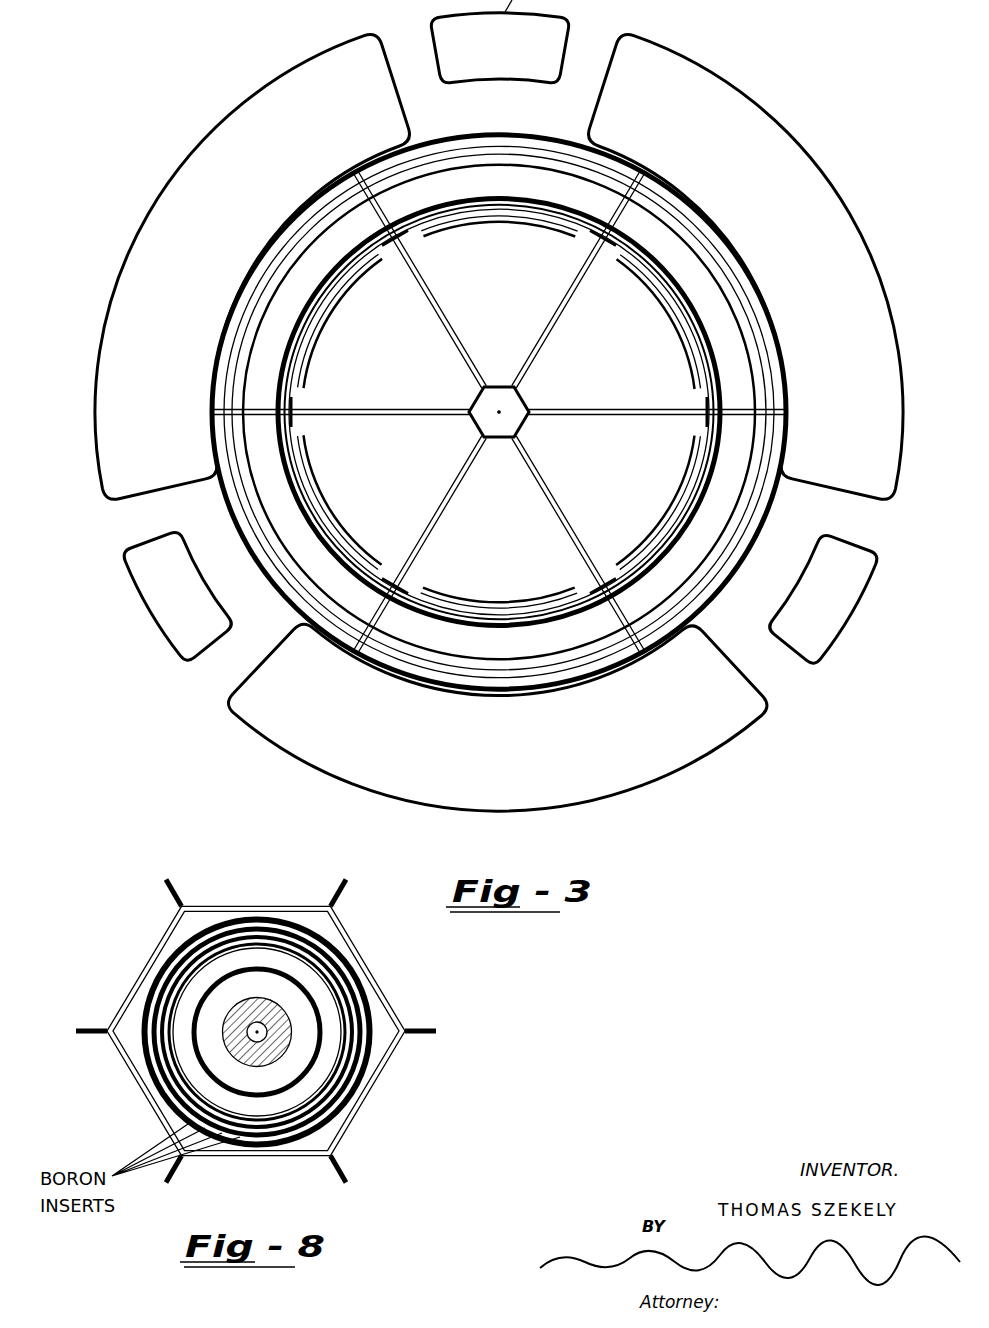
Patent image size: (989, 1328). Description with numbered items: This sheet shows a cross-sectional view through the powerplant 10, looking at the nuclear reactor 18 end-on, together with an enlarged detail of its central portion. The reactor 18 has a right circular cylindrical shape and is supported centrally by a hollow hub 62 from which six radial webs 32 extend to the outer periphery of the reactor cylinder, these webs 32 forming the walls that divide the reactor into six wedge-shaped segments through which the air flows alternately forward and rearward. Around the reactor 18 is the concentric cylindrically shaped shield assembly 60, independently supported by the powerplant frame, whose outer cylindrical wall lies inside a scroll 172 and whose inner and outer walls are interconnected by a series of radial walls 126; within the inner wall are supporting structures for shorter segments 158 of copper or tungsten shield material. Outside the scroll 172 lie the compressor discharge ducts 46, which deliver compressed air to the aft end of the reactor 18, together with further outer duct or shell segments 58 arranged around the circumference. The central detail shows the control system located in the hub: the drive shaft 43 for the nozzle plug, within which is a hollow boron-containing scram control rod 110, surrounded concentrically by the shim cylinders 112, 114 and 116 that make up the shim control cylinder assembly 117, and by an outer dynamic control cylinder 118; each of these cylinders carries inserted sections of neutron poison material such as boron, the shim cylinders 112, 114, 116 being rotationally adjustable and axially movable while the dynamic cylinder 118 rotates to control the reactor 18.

In FIG. 3, the powerplant 10 is at (225, 70).
In FIG. 3, the outer shield segment 58 is at (196, 150).
In FIG. 3, the compressor discharge duct 46 is at (150, 628).
In FIG. 3, the scroll 172 is at (505, 135).
In FIG. 3, the radial walls 126 is at (455, 173).
In FIG. 3, the nuclear reactor 18 is at (623, 338).
In FIG. 3, the shield assembly 60 is at (733, 511).
In FIG. 3, the shorter segment 158 is at (334, 306).
In FIG. 3, the radial webs 32 is at (424, 292).
In FIG. 3, the hollow hub 62 is at (522, 392).
In FIG. 8, the hollow hub 62 is at (250, 905).
In FIG. 8, the outer dynamic control cylinder 118 is at (345, 958).
In FIG. 8, the shim cylinder 116 is at (368, 1015).
In FIG. 8, the shim control cylinder assembly 117 is at (200, 945).
In FIG. 8, the shim cylinder 114 is at (352, 1062).
In FIG. 8, the shim cylinder 112 is at (320, 1095).
In FIG. 8, the drive shaft 43 is at (190, 1020).
In FIG. 8, the scram control rod 110 is at (222, 1037).